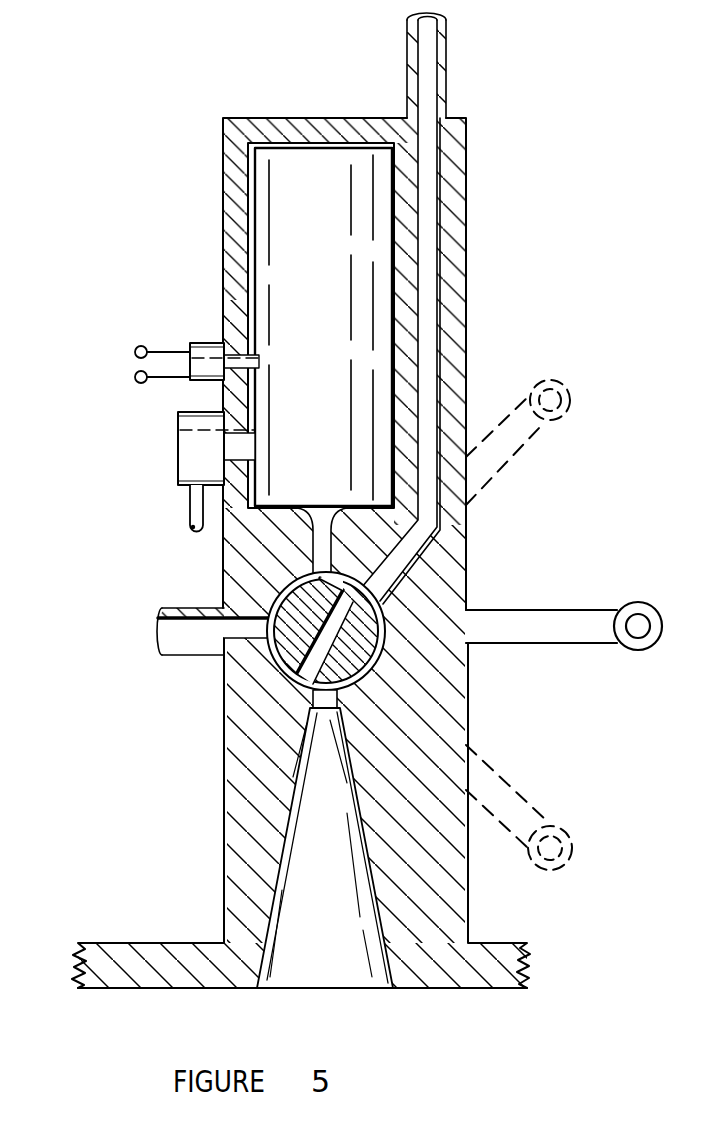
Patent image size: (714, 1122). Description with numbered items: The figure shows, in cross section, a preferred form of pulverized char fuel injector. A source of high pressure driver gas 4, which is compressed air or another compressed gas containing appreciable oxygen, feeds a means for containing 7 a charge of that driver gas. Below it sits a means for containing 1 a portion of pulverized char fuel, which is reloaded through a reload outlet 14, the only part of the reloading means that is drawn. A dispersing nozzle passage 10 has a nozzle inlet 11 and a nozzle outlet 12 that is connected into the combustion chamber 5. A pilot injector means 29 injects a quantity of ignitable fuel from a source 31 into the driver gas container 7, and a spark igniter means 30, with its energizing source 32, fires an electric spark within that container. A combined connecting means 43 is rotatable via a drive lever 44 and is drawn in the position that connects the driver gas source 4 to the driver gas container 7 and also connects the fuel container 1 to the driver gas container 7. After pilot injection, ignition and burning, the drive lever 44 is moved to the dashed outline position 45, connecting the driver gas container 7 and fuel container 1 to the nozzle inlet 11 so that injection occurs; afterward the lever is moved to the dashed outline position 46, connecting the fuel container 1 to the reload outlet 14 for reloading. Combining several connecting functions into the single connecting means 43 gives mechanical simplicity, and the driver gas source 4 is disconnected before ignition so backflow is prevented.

The means for containing pulverized char fuel 1 is at (264, 636).
The source of high pressure driver gas 4 is at (445, 42).
The combustion chamber 5 is at (315, 1028).
The means for containing driver gas 7 is at (293, 172).
The dispersing nozzle passage 10 is at (322, 872).
The nozzle inlet 11 is at (322, 740).
The nozzle outlet 12 is at (308, 968).
The reload outlet 14 is at (197, 628).
The pilot injector means 29 is at (178, 428).
The spark igniter means 30 is at (200, 343).
The source of ignitable fuel 31 is at (188, 509).
The energizing source 32 is at (135, 377).
The combined connecting means 43 is at (305, 614).
The drive lever 44 is at (532, 608).
The dashed outline position for injection 45 is at (530, 438).
The dashed outline position for reloading 46 is at (527, 805).